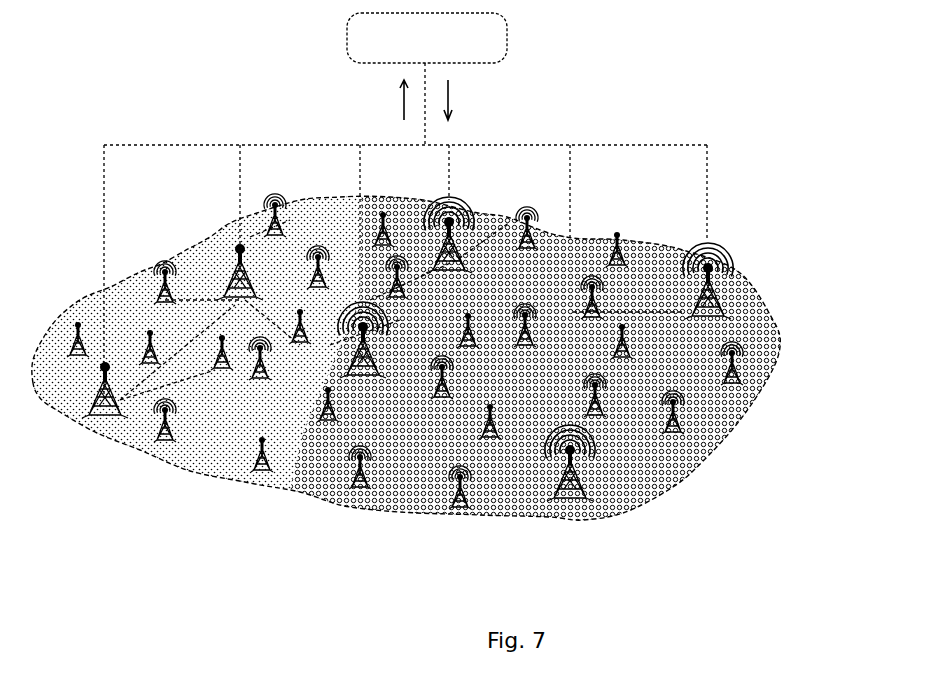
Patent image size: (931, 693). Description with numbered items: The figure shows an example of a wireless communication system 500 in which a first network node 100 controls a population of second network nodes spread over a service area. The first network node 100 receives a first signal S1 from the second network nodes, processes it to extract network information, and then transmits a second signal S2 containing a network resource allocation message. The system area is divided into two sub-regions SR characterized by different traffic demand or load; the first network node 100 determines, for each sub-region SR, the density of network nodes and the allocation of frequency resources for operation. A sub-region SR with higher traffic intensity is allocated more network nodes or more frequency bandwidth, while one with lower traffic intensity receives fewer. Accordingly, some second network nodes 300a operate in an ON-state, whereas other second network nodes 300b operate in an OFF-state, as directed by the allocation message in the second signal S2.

The first network node 100 is at (427, 38).
The wireless communication system 500 is at (431, 370).
The second network node 300a is at (462, 200).
The second network node 300b is at (617, 232).
The first signal S1 is at (395, 100).
The second signal S2 is at (457, 100).
The sub-region SR is at (219, 246).